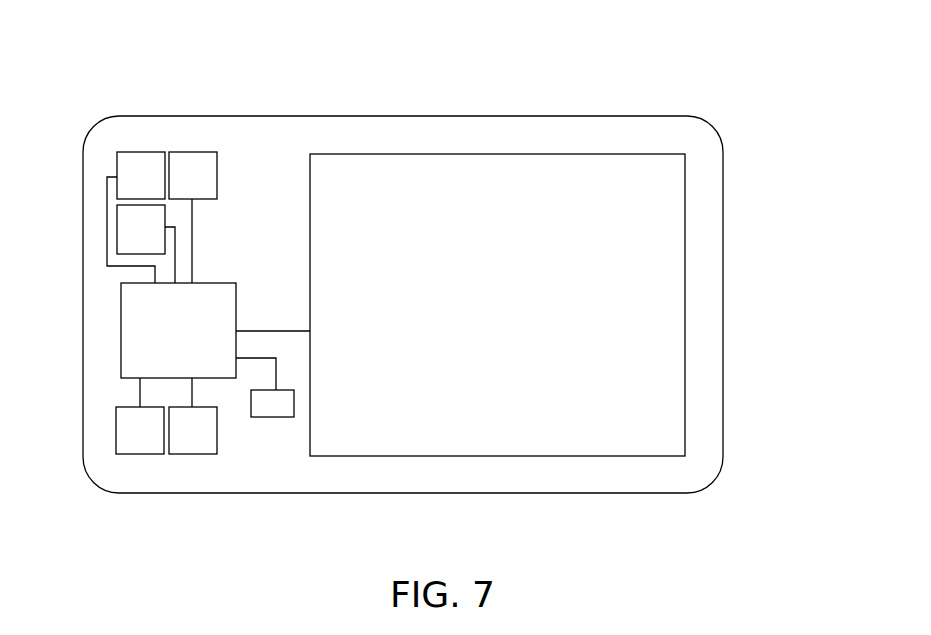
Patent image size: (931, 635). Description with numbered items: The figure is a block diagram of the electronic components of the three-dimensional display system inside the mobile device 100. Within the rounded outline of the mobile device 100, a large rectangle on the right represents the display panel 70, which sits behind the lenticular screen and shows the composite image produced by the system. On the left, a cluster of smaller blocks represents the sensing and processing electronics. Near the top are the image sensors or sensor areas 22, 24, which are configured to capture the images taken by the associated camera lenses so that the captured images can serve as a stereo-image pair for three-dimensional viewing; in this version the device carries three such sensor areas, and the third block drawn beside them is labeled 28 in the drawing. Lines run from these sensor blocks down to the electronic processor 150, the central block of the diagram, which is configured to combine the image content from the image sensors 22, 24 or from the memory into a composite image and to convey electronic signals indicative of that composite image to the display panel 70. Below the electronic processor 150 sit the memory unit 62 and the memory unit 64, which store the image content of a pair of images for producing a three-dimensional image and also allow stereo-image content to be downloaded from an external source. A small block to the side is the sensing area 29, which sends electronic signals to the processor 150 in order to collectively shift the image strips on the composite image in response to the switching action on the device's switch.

The mobile device 100 is at (662, 95).
The display panel 70 is at (687, 305).
The image sensor 22 is at (125, 168).
The image sensor 24 is at (215, 172).
The storage 28 is at (124, 215).
The electronic processor 150 is at (128, 313).
The sensing area 29 is at (265, 412).
The memory unit 62 is at (121, 432).
The memory unit 64 is at (213, 433).